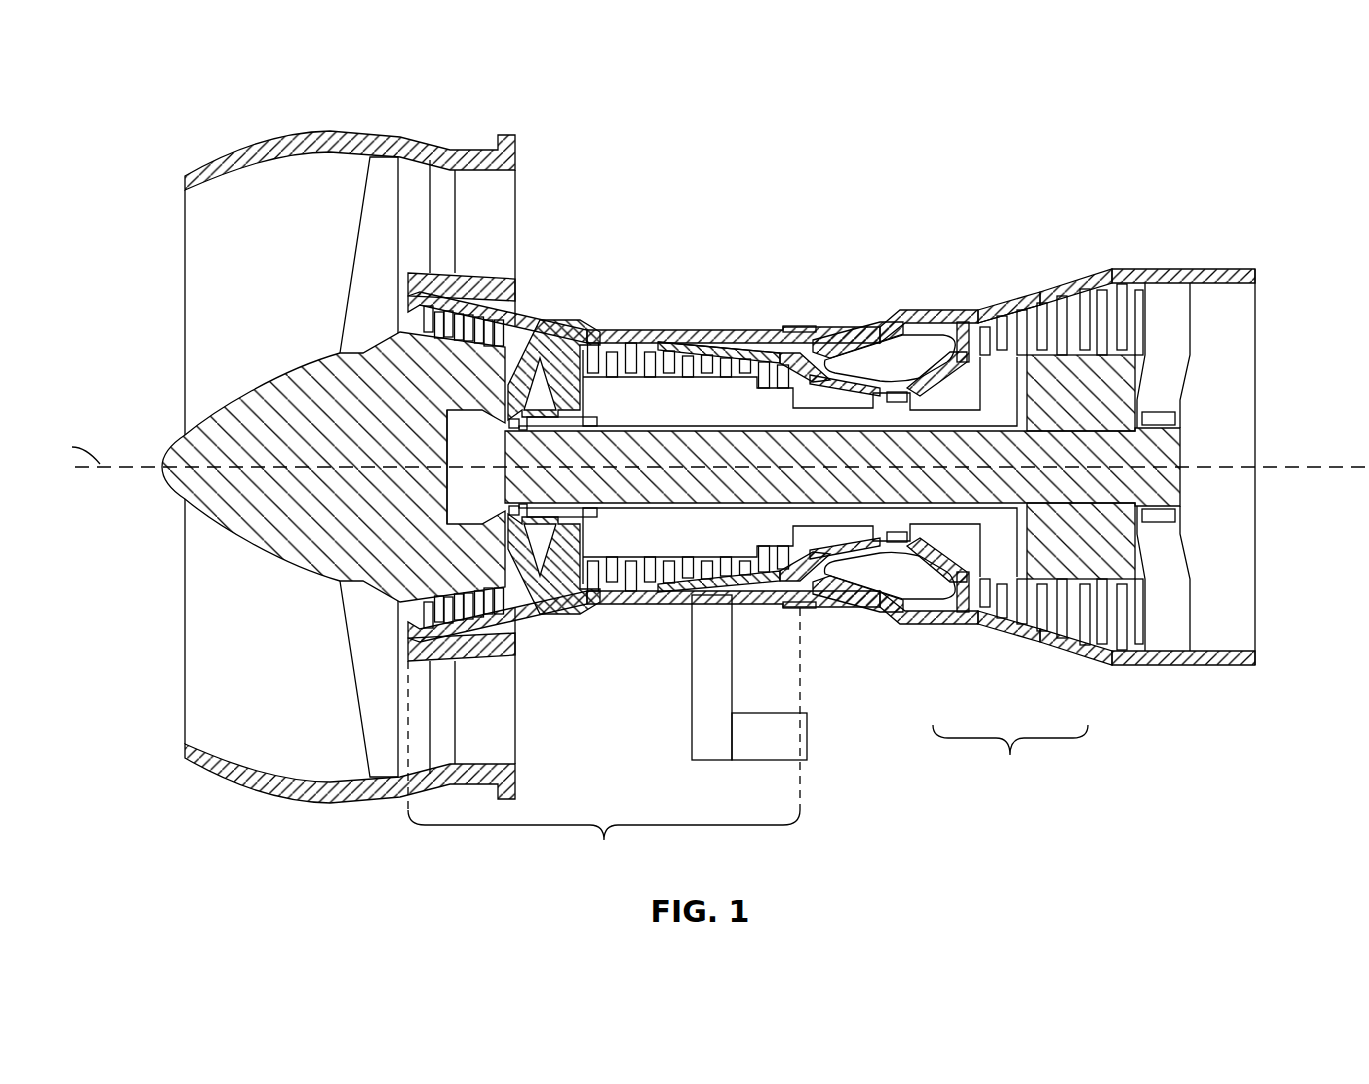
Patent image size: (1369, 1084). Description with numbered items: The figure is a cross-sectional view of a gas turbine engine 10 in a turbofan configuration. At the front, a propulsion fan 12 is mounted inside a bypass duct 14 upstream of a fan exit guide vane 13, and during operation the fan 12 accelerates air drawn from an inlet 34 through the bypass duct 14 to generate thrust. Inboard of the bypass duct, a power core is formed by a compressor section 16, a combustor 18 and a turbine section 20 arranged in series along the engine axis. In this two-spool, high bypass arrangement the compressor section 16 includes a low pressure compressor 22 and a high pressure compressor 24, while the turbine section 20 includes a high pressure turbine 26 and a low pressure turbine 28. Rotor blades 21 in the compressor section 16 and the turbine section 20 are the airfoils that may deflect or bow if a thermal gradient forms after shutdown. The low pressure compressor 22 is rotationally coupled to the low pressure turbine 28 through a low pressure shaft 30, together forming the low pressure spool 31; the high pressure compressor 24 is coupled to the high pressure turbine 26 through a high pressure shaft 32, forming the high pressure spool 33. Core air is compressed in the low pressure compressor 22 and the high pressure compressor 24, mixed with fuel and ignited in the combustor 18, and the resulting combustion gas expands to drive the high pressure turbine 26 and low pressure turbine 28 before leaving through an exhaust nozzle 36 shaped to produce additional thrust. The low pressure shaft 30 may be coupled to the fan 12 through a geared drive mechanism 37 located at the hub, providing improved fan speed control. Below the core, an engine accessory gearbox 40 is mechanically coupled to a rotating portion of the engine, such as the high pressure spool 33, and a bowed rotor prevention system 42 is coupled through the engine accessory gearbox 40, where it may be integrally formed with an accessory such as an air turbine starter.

The gas turbine engine 10 is at (180, 121).
The propulsion fan 12 is at (360, 262).
The fan exit guide vane 13 is at (445, 180).
The bypass duct 14 is at (500, 230).
The compressor section 16 is at (604, 742).
The combustor 18 is at (890, 352).
The turbine section 20 is at (1010, 757).
The rotor blades 21 is at (787, 368).
The low pressure compressor 22 is at (509, 626).
The high pressure compressor 24 is at (643, 603).
The high pressure turbine 26 is at (991, 625).
The low pressure turbine 28 is at (1087, 658).
The low pressure shaft 30 is at (905, 487).
The low pressure spool 31 is at (1115, 385).
The high pressure shaft 32 is at (822, 510).
The high pressure spool 33 is at (662, 400).
The inlet 34 is at (195, 270).
The exhaust nozzle 36 is at (1243, 385).
The geared drive mechanism 37 is at (466, 481).
The engine accessory gearbox 40 is at (690, 708).
The bowed rotor prevention system 42 is at (770, 762).